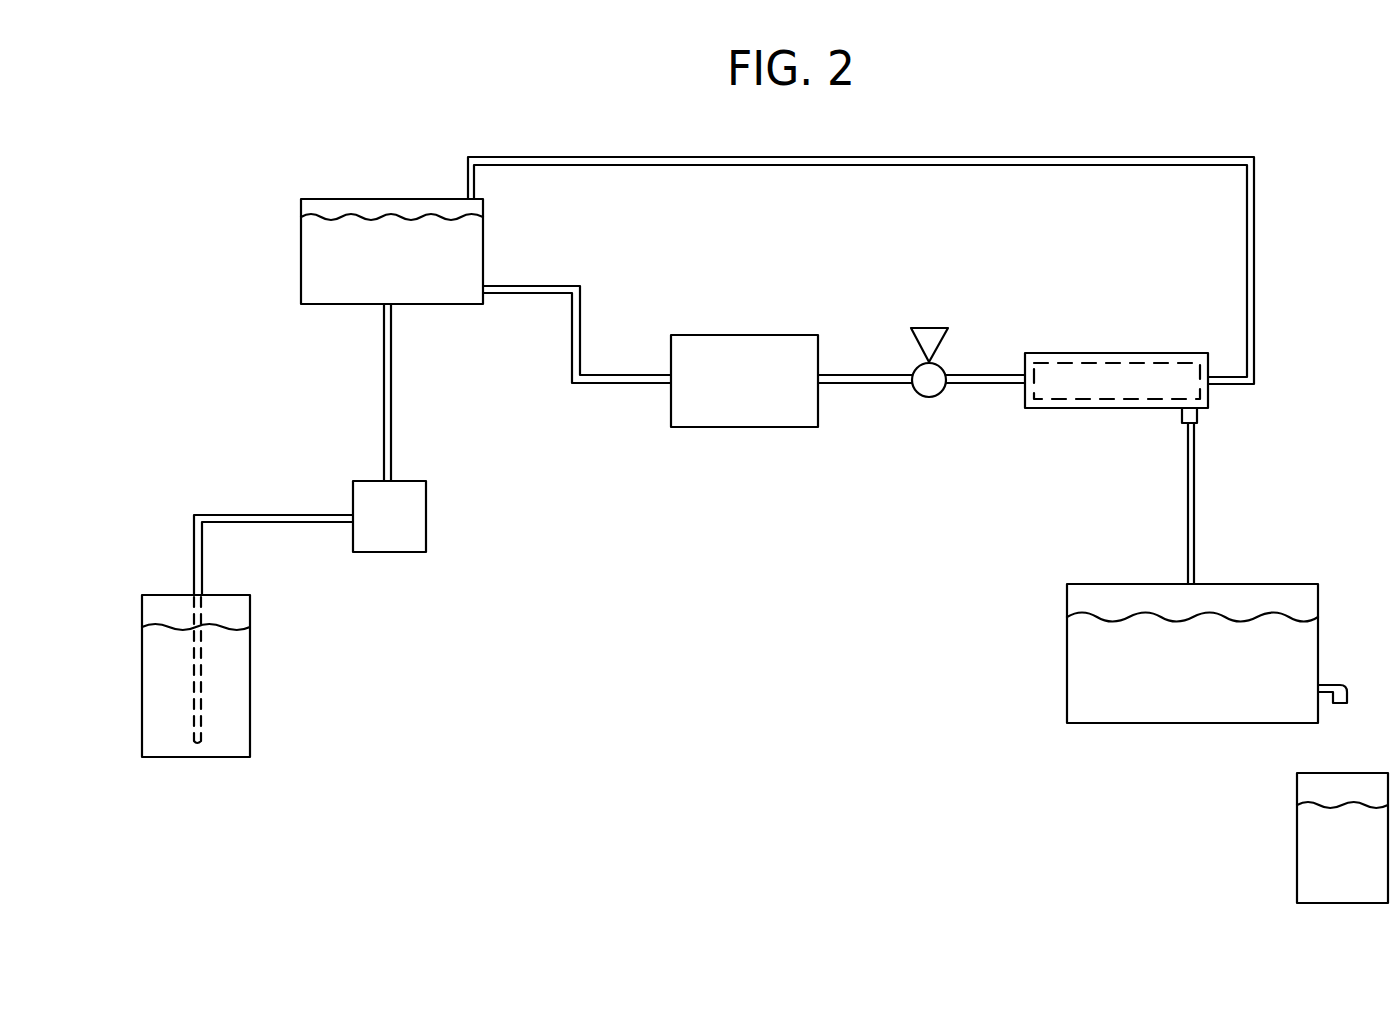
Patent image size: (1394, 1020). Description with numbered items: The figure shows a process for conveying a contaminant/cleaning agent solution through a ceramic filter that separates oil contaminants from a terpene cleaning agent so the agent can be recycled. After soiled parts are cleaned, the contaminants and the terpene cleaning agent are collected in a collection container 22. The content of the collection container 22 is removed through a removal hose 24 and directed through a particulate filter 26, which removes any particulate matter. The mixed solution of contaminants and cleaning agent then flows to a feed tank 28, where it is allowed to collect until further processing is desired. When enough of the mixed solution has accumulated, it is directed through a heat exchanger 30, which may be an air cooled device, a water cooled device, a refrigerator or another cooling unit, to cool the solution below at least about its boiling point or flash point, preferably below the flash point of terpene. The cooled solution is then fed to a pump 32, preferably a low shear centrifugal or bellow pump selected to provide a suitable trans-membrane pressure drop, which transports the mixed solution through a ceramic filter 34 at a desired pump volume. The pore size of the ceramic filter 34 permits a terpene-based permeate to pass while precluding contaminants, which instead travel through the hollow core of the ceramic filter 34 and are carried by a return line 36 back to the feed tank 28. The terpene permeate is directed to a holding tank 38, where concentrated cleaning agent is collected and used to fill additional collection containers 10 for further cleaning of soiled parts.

The collection container 10 is at (1308, 845).
The collection container 22 is at (227, 685).
The removal hose 24 is at (242, 515).
The particulate filter 26 is at (402, 522).
The feed tank 28 is at (315, 263).
The heat exchanger 30 is at (742, 352).
The pump 32 is at (927, 383).
The ceramic filter 34 is at (1182, 396).
The return line 36 is at (1254, 248).
The holding tank 38 is at (1083, 658).